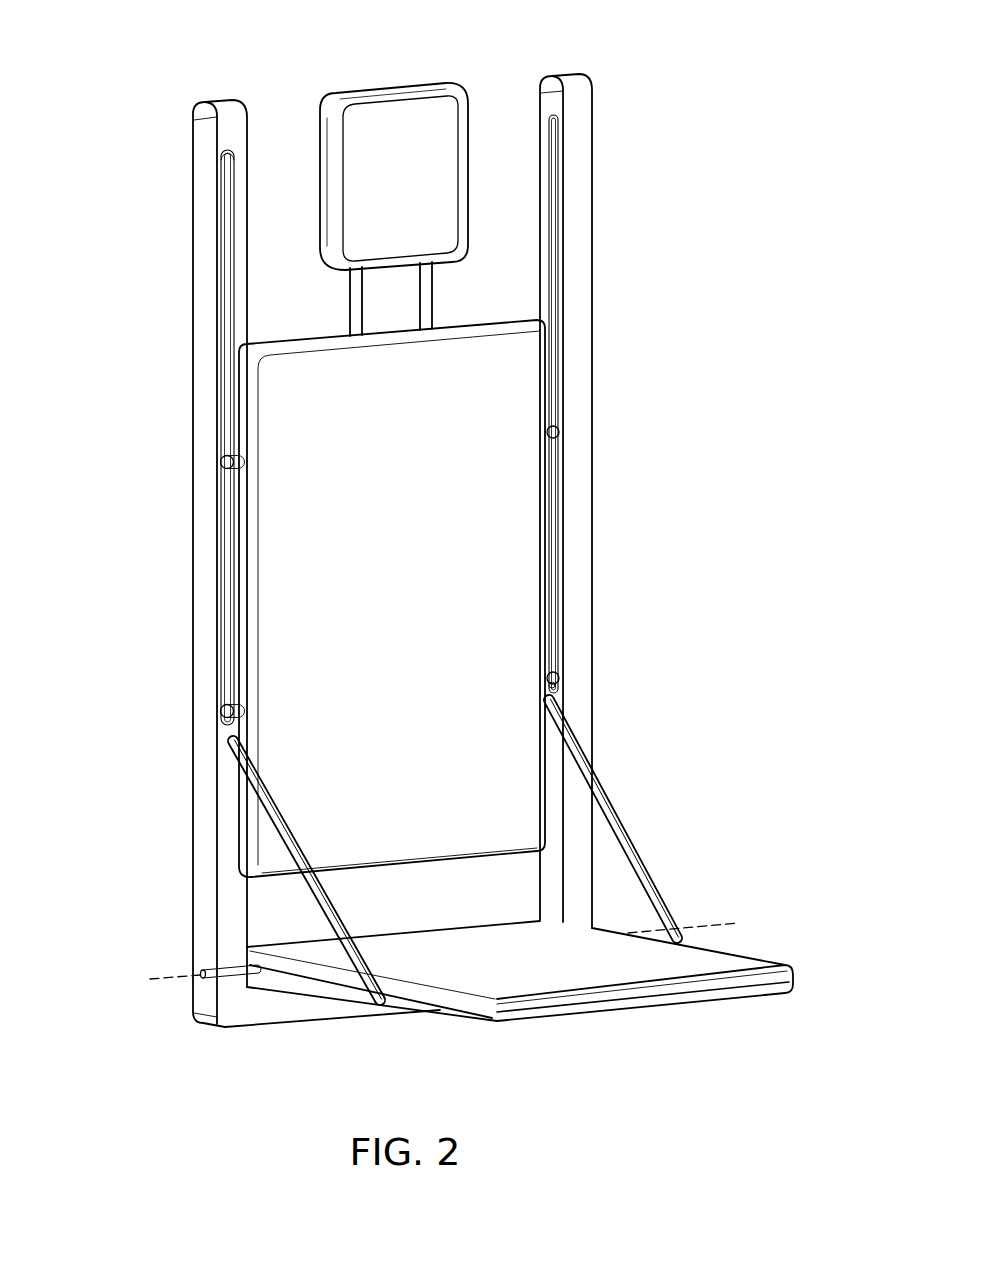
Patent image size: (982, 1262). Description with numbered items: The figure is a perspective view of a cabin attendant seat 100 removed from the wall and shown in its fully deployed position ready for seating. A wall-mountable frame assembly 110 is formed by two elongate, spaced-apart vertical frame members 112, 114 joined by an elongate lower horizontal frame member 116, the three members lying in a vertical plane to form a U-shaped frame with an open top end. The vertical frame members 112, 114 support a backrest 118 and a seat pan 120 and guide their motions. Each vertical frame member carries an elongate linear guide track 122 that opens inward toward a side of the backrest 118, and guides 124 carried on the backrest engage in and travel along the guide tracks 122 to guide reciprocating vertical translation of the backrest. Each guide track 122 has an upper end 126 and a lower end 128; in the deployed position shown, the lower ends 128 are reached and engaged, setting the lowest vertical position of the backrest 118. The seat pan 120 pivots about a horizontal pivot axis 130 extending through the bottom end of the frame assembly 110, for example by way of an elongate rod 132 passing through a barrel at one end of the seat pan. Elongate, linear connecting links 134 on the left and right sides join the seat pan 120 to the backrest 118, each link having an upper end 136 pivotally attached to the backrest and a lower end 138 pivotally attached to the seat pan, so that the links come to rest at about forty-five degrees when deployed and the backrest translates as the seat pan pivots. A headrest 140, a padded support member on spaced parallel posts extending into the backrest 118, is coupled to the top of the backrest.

The cabin attendant seat 100 is at (607, 112).
The frame assembly 110 is at (596, 497).
The vertical frame member 112 is at (577, 210).
The vertical frame member 114 is at (200, 284).
The lower horizontal frame member 116 is at (278, 997).
The backrest 118 is at (290, 616).
The seat pan 120 is at (744, 968).
The guide track 122 is at (213, 395).
The guide 124 is at (222, 462).
The upper end of guide track 126 is at (217, 149).
The lower end of guide track 128 is at (228, 722).
The horizontal pivot axis 130 is at (173, 975).
The elongate rod 132 is at (228, 978).
The connecting link 134 is at (637, 845).
The upper end of link 136 is at (552, 692).
The lower end of link 138 is at (380, 1008).
The headrest 140 is at (389, 84).